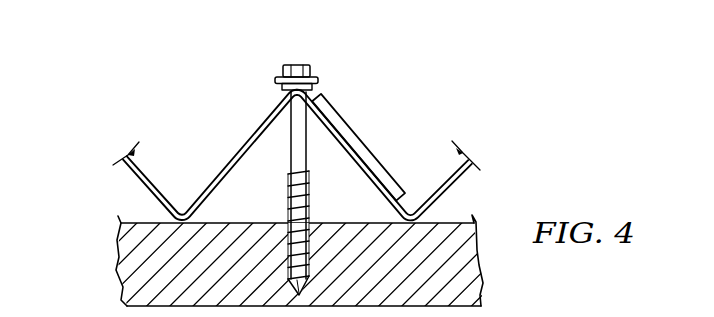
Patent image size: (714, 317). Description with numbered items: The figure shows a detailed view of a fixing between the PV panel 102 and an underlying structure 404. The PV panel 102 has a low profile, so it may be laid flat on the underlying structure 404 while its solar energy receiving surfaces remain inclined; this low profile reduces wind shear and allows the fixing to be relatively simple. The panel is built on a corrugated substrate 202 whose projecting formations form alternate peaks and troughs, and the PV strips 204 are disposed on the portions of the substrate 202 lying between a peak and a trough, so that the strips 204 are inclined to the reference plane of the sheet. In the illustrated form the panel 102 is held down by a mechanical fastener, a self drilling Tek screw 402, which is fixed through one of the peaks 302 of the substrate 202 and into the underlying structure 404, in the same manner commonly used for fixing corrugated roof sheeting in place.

The PV panel 102 is at (277, 129).
The corrugated substrate 202 is at (216, 161).
The PV strips 204 is at (362, 127).
The peaks 302 is at (285, 106).
The self drilling Tek screws 402 is at (298, 71).
The underlying structure 404 is at (143, 230).